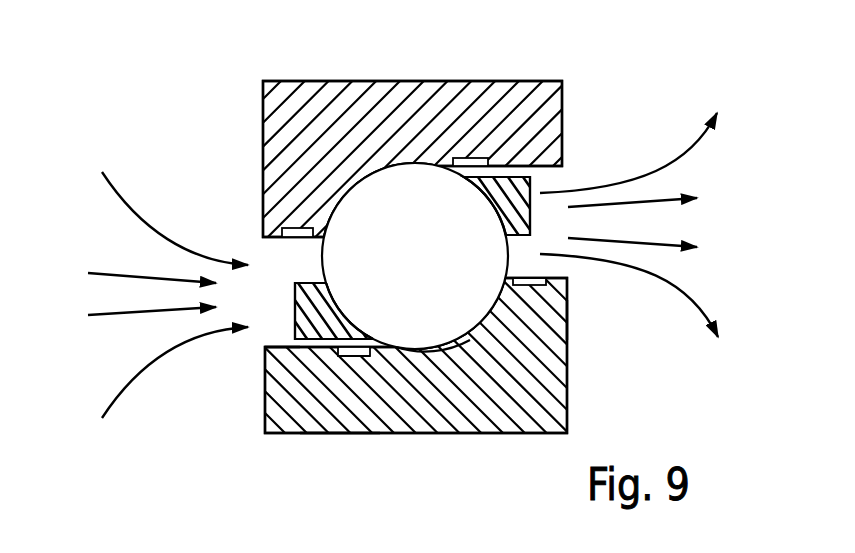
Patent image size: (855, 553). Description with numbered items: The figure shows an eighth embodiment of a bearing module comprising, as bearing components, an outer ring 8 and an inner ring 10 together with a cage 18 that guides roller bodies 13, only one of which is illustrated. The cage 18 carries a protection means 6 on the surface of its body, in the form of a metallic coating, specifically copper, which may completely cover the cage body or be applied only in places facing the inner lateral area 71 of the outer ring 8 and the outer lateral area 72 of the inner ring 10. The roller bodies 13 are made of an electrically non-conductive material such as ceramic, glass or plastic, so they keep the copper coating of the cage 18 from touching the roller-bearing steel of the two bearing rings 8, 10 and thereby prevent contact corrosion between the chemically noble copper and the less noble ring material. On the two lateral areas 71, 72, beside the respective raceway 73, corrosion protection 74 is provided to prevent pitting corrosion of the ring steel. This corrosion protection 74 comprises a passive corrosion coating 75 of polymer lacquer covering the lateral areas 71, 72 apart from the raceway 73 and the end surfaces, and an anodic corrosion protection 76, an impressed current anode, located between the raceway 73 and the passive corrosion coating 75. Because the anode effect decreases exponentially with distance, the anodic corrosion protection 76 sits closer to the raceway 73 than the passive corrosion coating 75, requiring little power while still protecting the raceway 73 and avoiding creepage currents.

The protection means 6 is at (294, 304).
The outer ring 8 is at (452, 100).
The inner ring 10 is at (508, 410).
The roller bodies 13 is at (429, 267).
The cage 18 is at (534, 210).
The inner lateral area 71 is at (543, 170).
The outer lateral area 72 is at (283, 340).
The raceway 73 is at (453, 345).
The corrosion protection 74 is at (541, 269).
The passive corrosion coating 75 is at (338, 434).
The anodic corrosion protection 76 is at (565, 323).